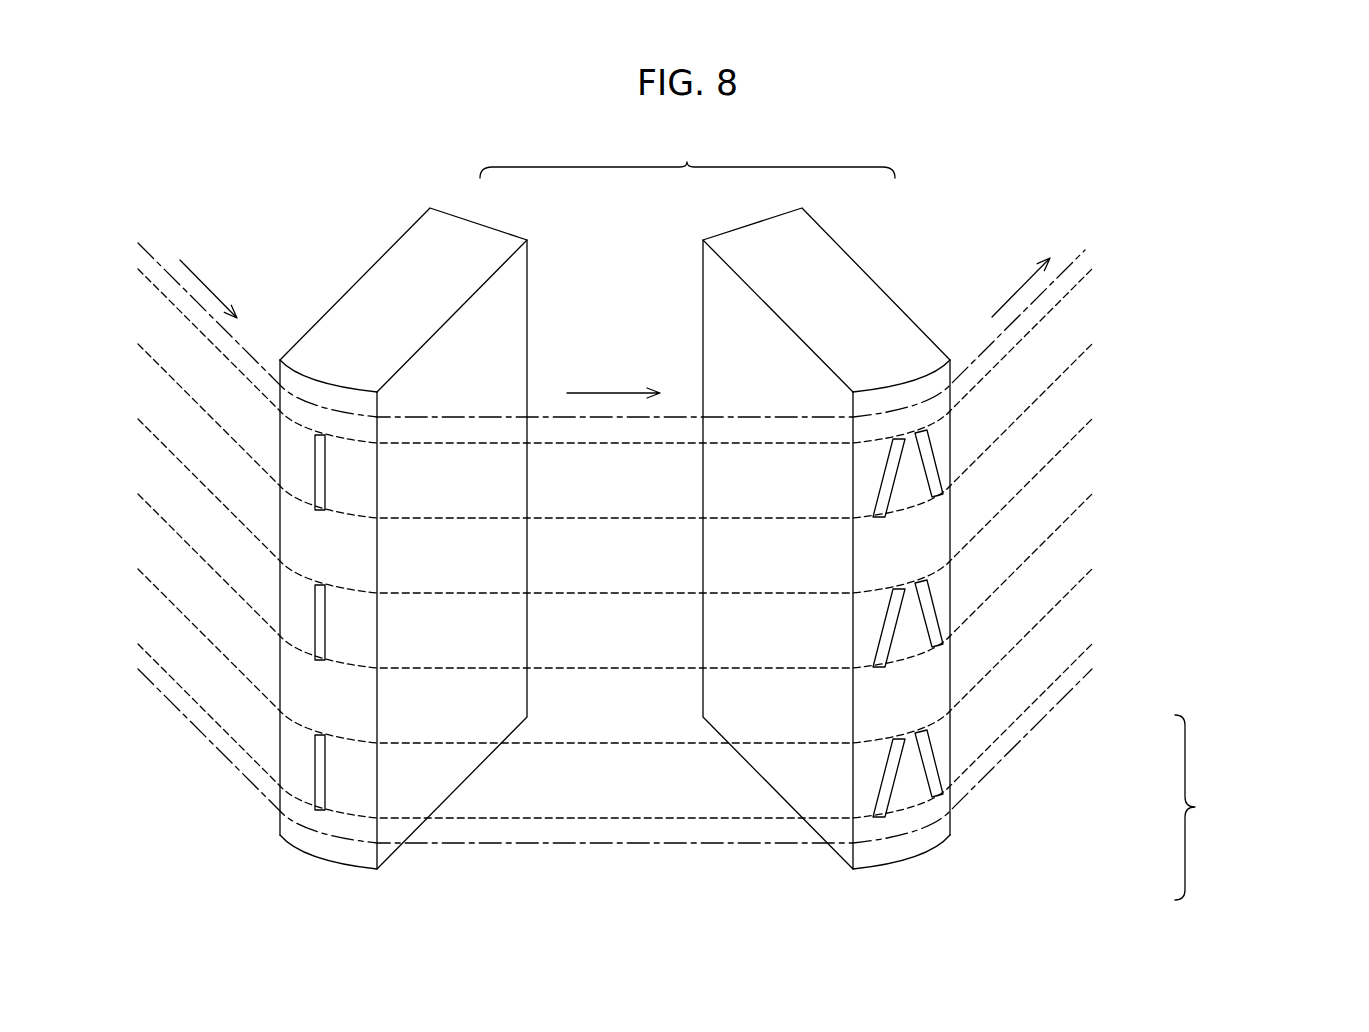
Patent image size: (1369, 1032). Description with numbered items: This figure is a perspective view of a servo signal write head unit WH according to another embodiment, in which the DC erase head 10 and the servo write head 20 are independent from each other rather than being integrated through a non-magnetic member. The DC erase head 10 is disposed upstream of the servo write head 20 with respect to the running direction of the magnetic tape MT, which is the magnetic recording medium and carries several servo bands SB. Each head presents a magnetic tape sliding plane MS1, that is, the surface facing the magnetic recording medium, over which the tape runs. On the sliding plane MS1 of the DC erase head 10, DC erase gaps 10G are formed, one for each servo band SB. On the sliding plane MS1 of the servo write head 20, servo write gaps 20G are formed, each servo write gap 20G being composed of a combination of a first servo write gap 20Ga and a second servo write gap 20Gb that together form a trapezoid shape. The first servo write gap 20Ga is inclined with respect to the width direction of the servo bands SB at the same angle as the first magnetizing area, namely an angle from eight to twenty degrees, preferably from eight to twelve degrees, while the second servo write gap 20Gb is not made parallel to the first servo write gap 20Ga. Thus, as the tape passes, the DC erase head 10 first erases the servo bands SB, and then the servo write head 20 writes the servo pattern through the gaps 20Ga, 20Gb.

The servo signal write head unit WH is at (740, 156).
The DC erase head 10 is at (483, 232).
The servo write head 20 is at (742, 233).
The DC erase gap 10G is at (325, 472).
The servo write gap 20G is at (1267, 807).
The first servo write gap 20Ga is at (887, 468).
The second servo write gap 20Gb is at (927, 447).
The magnetic tape sliding plane MS1 is at (247, 823).
The magnetic tape MT is at (1085, 245).
The servo band SB is at (1068, 332).